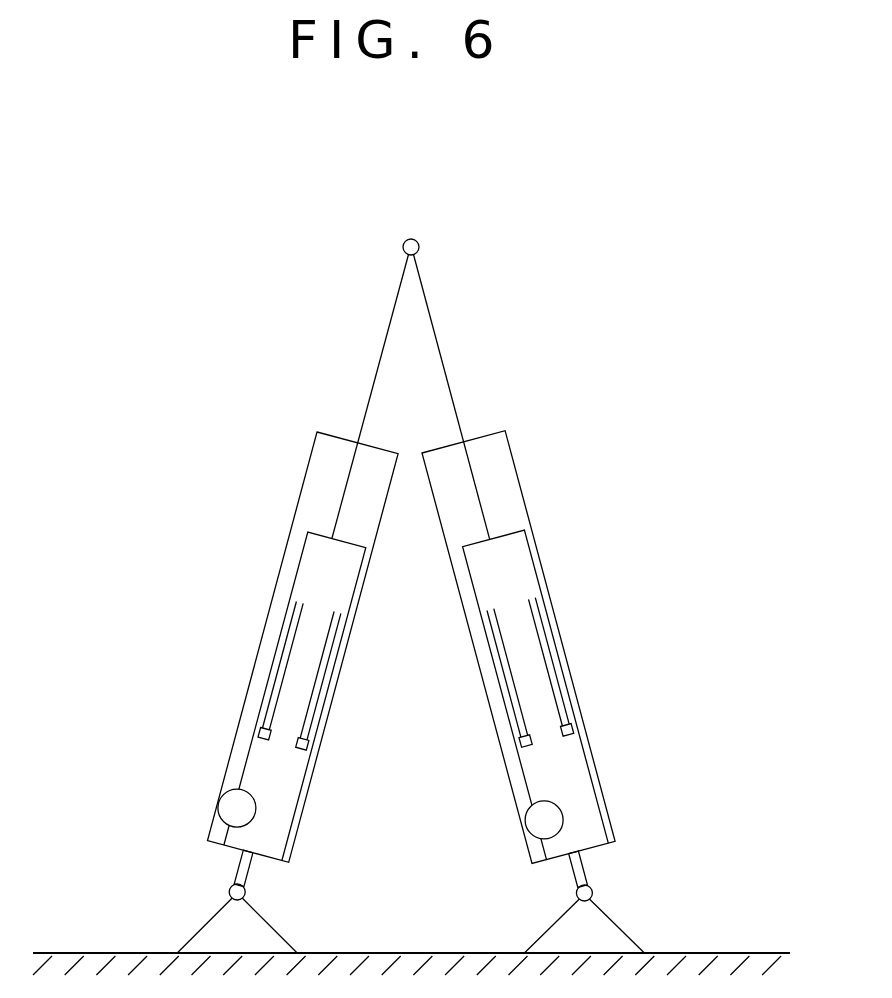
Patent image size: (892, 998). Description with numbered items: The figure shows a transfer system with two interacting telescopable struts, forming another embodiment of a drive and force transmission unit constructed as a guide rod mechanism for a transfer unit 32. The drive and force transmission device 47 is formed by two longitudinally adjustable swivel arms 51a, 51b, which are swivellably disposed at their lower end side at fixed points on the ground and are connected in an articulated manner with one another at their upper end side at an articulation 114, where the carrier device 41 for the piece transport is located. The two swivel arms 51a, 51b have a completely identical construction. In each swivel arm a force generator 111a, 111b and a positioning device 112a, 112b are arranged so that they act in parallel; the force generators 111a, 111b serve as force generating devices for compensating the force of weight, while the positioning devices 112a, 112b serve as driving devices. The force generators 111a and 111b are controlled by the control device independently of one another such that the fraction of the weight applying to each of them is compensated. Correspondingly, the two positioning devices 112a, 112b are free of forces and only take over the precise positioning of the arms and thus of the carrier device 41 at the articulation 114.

The carrier device 41 is at (422, 336).
The articulation 114 is at (418, 243).
The transfer unit 32 is at (326, 299).
The drive and force transmission device 47 is at (547, 692).
The swivel arm 51a is at (271, 692).
The swivel arm 51b is at (545, 692).
The force generator 111a is at (368, 731).
The force generator 111b is at (595, 738).
The positioning device 112a is at (199, 700).
The positioning device 112b is at (495, 732).